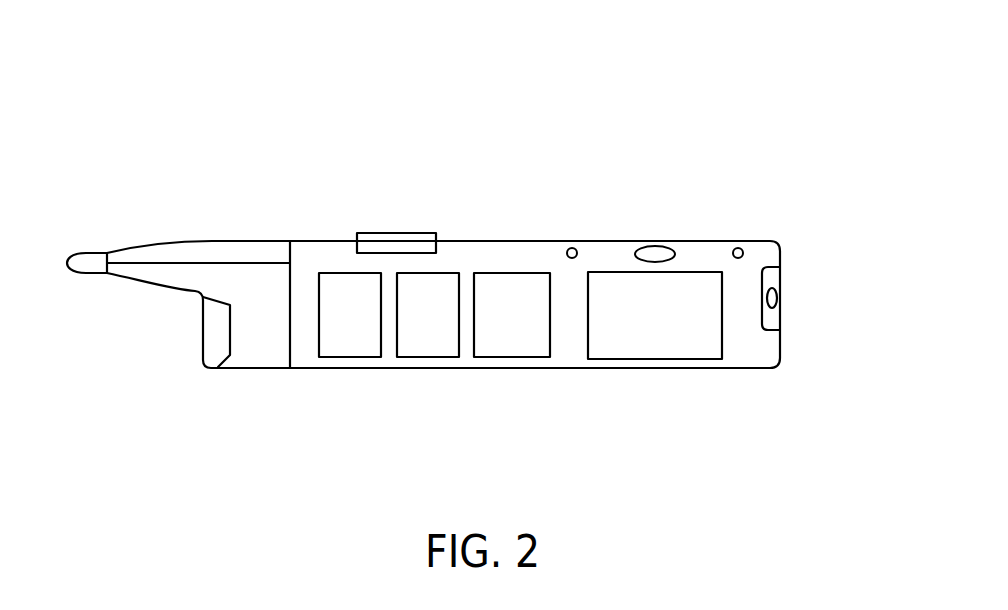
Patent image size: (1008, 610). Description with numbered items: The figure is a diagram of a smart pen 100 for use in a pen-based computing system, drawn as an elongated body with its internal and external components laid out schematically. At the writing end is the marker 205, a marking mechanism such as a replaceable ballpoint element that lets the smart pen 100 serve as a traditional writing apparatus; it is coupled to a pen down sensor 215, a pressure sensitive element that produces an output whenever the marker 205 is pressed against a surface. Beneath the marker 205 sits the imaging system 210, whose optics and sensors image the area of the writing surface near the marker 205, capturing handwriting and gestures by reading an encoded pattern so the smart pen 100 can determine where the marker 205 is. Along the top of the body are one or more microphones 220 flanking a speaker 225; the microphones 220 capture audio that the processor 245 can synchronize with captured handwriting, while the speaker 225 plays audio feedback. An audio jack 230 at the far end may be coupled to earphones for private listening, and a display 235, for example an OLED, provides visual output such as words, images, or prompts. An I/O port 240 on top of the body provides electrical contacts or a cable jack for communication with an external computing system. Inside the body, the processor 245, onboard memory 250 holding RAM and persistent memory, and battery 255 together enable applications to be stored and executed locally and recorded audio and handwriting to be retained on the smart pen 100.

The smart pen 100 is at (191, 40).
The marker 205 is at (87, 259).
The imaging system 210 is at (218, 328).
The pen down sensor 215 is at (287, 310).
The microphones 220 is at (762, 191).
The speaker 225 is at (656, 246).
The audio jack 230 is at (867, 336).
The display 235 is at (657, 326).
The I/O port 240 is at (400, 243).
The processor 245 is at (510, 339).
The onboard memory 250 is at (433, 337).
The battery 255 is at (350, 338).